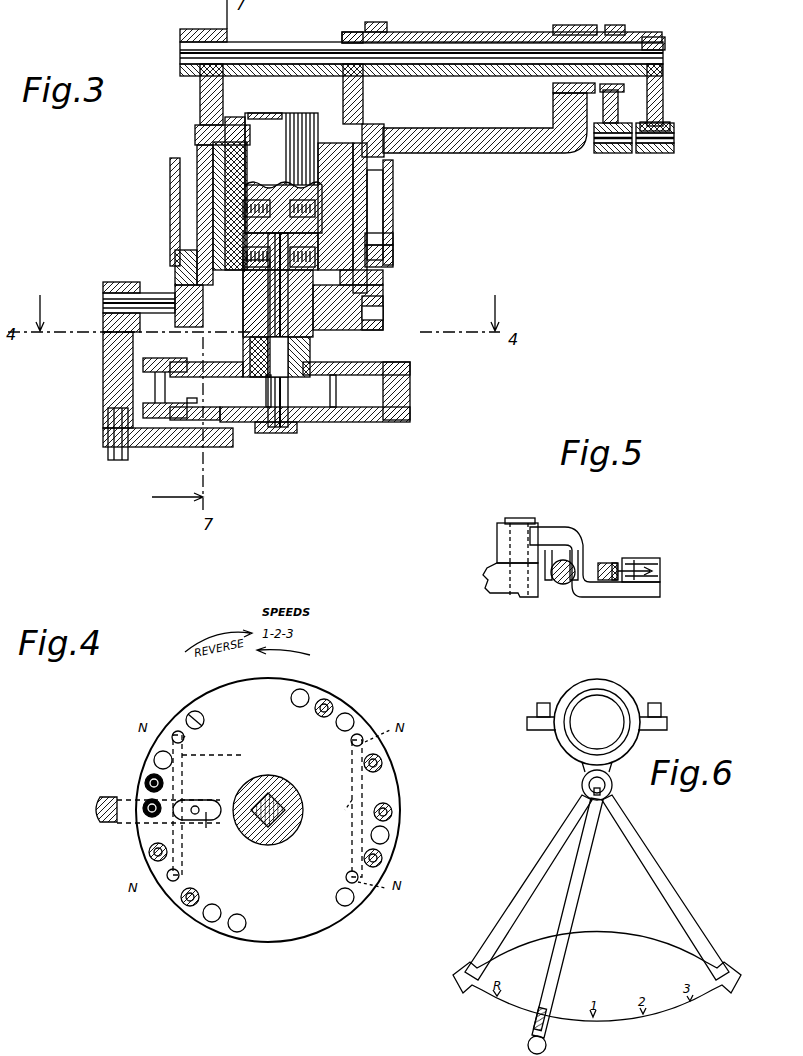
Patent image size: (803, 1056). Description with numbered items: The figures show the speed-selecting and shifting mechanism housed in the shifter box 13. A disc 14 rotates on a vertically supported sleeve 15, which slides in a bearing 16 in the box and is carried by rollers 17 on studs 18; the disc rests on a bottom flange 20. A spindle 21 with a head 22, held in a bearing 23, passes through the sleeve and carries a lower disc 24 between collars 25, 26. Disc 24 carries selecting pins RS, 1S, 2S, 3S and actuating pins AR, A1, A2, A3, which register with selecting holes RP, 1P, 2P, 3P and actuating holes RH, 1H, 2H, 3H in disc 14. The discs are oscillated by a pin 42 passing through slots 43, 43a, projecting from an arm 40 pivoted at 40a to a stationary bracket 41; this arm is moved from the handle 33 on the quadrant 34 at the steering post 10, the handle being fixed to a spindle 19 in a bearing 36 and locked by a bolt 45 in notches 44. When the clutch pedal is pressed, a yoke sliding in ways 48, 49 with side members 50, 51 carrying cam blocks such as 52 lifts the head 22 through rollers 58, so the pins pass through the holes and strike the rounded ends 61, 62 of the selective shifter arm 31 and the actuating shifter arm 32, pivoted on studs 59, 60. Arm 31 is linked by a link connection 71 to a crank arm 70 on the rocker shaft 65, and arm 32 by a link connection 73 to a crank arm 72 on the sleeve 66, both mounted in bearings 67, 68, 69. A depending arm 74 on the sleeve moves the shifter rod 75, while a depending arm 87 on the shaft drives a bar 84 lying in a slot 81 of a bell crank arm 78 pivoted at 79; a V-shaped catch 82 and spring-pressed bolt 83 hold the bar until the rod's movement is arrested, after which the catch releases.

In FIG. 3, the crank arm 70 is at (183, 35).
In FIG. 3, the rocker shaft 65 is at (258, 55).
In FIG. 3, the sleeve 66 is at (452, 32).
In FIG. 3, the bearing 68 is at (350, 31).
In FIG. 3, the crank arm 72 is at (386, 22).
In FIG. 3, the bearing 69 is at (566, 25).
In FIG. 3, the depending arm 87 is at (663, 98).
In FIG. 3, the depending arm 74 is at (617, 153).
In FIG. 3, the shifter box 13 is at (492, 145).
In FIG. 5, the shifter box 13 is at (500, 582).
In FIG. 3, the bearing 23 is at (364, 125).
In FIG. 3, the bearing 67 is at (207, 86).
In FIG. 3, the way 48 is at (215, 150).
In FIG. 3, the link connection 71 is at (170, 172).
In FIG. 3, the head 22 is at (276, 140).
In FIG. 3, the way 49 is at (318, 165).
In FIG. 3, the side member 50 is at (225, 201).
In FIG. 3, the rollers 58 is at (243, 212).
In FIG. 3, the cam block 52 is at (367, 185).
In FIG. 3, the side member 51 is at (383, 205).
In FIG. 3, the link connection 73 is at (393, 218).
In FIG. 3, the rollers 17 is at (393, 238).
In FIG. 3, the studs 18 is at (393, 253).
In FIG. 3, the bearing 16 is at (383, 280).
In FIG. 3, the actuating shifter arm 32 is at (383, 292).
In FIG. 4, the actuating shifter arm 32 is at (350, 805).
In FIG. 3, the stud 60 is at (383, 315).
In FIG. 3, the selective shifter arm 31 is at (184, 264).
In FIG. 4, the selective shifter arm 31 is at (224, 755).
In FIG. 3, the spindle 21 is at (190, 268).
In FIG. 4, the spindle 21 is at (300, 798).
In FIG. 3, the stud 59 is at (170, 294).
In FIG. 3, the sleeve 15 is at (310, 350).
In FIG. 4, the sleeve 15 is at (266, 832).
In FIG. 3, the bottom flange 20 is at (250, 380).
In FIG. 3, the disc 14 is at (410, 368).
In FIG. 4, the disc 14 is at (290, 932).
In FIG. 3, the third-speed selecting pin 3S is at (410, 394).
In FIG. 4, the third-speed selecting pin 3S is at (392, 810).
In FIG. 3, the collar 25 is at (271, 392).
In FIG. 3, the disc 24 is at (365, 423).
In FIG. 3, the collar 26 is at (290, 433).
In FIG. 3, the stationary bracket 41 is at (104, 389).
In FIG. 4, the stationary bracket 41 is at (100, 810).
In FIG. 3, the arm 40 is at (165, 447).
In FIG. 3, the pivot 40a is at (115, 437).
In FIG. 3, the slot 43 is at (190, 362).
In FIG. 4, the slot 43 is at (206, 825).
In FIG. 3, the pin 42 is at (200, 393).
In FIG. 4, the pin 42 is at (198, 806).
In FIG. 3, the slot 43a is at (152, 415).
In FIG. 4, the end 62 is at (185, 740).
In FIG. 4, the end 61 is at (182, 876).
In FIG. 4, the third-speed selecting hole 3P is at (304, 694).
In FIG. 4, the second-speed selecting pin 2S is at (330, 704).
In FIG. 4, the first-speed selecting hole 1P is at (352, 718).
In FIG. 4, the reverse selecting pin RS is at (382, 763).
In FIG. 4, the second-speed selecting hole 2P is at (388, 835).
In FIG. 4, the first-speed selecting pin 1S is at (382, 859).
In FIG. 4, the reverse selecting hole RP is at (352, 902).
In FIG. 4, the third-speed actuating hole 3H is at (236, 932).
In FIG. 4, the second-speed actuating hole 2H is at (208, 921).
In FIG. 4, the first-speed actuating pin A1 is at (185, 902).
In FIG. 4, the reverse actuating pin AR is at (148, 853).
In FIG. 4, the third-speed actuating pin A3 is at (146, 815).
In FIG. 4, the second-speed actuating pin A2 is at (145, 783).
In FIG. 4, the first-speed actuating hole 1H is at (154, 760).
In FIG. 4, the reverse actuating hole RH is at (190, 713).
In FIG. 5, the pivot 79 is at (517, 540).
In FIG. 5, the bell crank arm 78 is at (566, 537).
In FIG. 5, the shifter rod 75 is at (563, 586).
In FIG. 5, the V-shaped catch 82 is at (605, 562).
In FIG. 5, the slot 81 is at (620, 562).
In FIG. 5, the spring-pressed bolt 83 is at (655, 573).
In FIG. 5, the bar 84 is at (613, 576).
In FIG. 6, the steering post 10 is at (622, 702).
In FIG. 6, the bearing 36 is at (612, 790).
In FIG. 6, the spindle 19 is at (589, 783).
In FIG. 6, the quadrant 34 is at (628, 996).
In FIG. 6, the locking notches 44 is at (497, 1000).
In FIG. 6, the handle 33 is at (553, 972).
In FIG. 6, the locking bolt 45 is at (533, 1025).